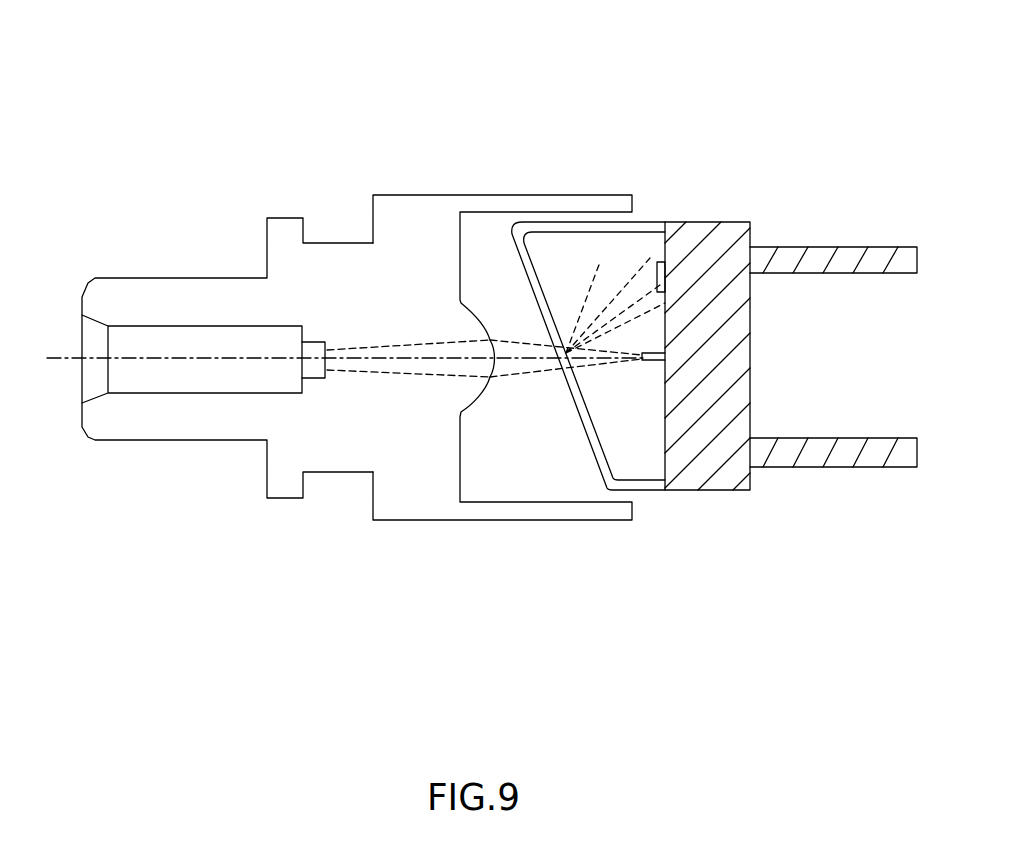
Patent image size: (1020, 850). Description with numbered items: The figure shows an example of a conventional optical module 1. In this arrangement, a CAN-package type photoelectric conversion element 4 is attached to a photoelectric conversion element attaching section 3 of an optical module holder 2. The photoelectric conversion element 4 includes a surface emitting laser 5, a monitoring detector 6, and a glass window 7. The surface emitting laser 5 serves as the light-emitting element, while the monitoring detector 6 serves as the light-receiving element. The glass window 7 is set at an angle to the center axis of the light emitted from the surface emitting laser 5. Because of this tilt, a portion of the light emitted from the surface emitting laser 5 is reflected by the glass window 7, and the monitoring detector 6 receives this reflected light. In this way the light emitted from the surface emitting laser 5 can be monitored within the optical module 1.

The optical module 1 is at (80, 102).
The optical module holder 2 is at (335, 243).
The photoelectric conversion element attaching section 3 is at (538, 193).
The photoelectric conversion element 4 is at (713, 222).
The surface emitting laser 5 is at (645, 361).
The monitoring detector 6 is at (657, 280).
The glass window 7 is at (553, 322).